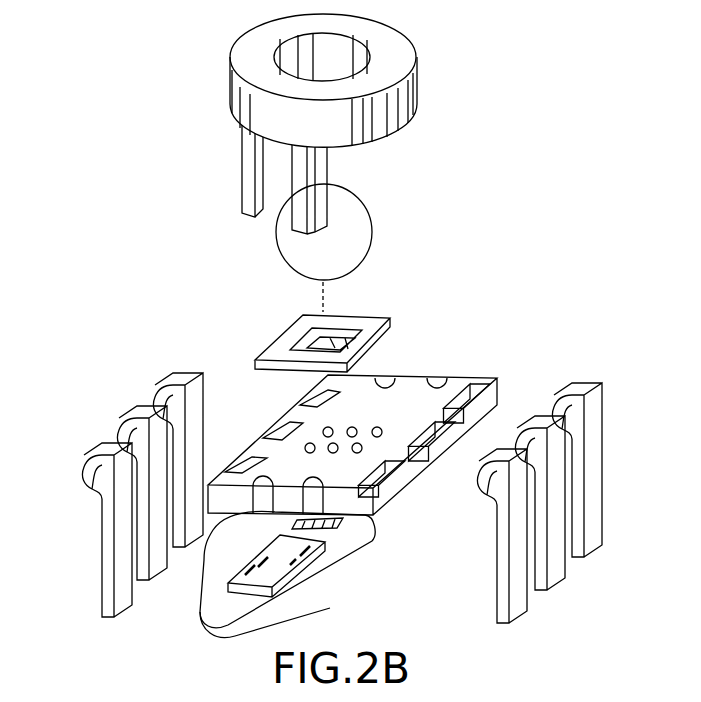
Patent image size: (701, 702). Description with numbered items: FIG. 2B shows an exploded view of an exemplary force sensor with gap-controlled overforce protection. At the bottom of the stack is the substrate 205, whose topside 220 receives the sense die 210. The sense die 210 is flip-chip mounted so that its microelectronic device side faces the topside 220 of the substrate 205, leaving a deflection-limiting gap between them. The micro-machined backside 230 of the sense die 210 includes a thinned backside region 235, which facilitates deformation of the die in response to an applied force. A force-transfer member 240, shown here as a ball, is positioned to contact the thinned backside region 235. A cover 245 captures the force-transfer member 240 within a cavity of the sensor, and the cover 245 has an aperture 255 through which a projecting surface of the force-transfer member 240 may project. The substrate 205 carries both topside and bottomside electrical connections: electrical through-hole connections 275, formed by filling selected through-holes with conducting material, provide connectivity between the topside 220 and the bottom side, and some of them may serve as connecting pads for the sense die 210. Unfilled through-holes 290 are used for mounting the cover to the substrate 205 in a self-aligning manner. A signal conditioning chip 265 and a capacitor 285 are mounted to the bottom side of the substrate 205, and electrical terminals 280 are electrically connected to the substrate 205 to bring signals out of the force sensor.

The substrate 205 is at (516, 382).
The sense die 210 is at (277, 339).
The topside of the substrate 220 is at (450, 378).
The micro-machined backside 230 is at (376, 320).
The thinned backside region 235 is at (360, 344).
The force-transfer member 240 is at (366, 230).
The cover 245 is at (422, 90).
The aperture 255 is at (362, 61).
The signal conditioning chip 265 is at (305, 572).
The electrical through-hole connections 275 is at (358, 451).
The electrical terminals 280 is at (600, 480).
The capacitor 285 is at (348, 530).
The unfilled through-holes 290 is at (440, 375).